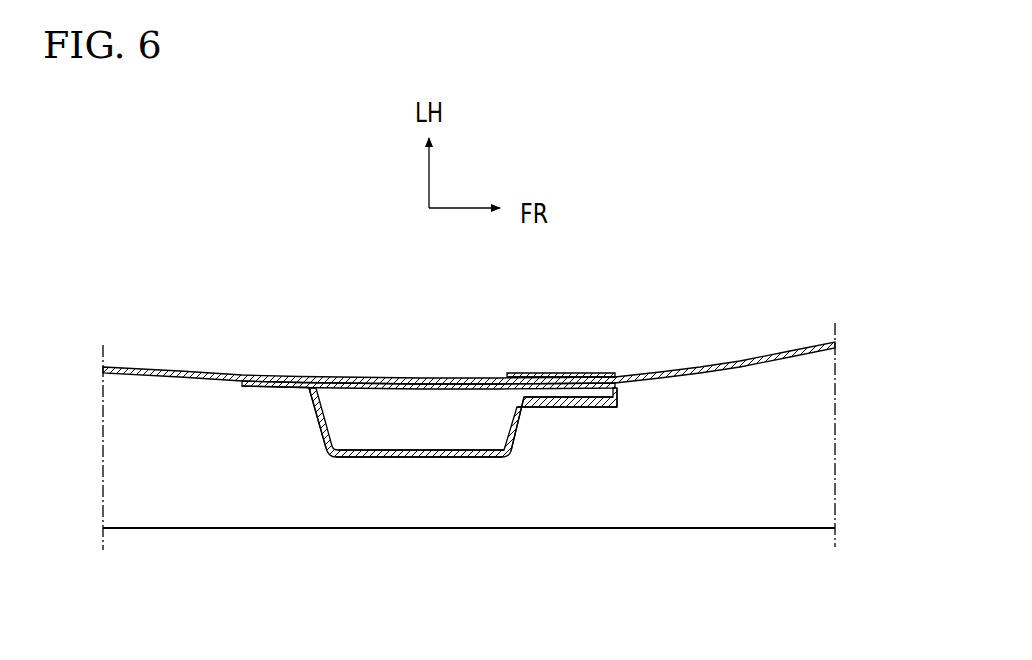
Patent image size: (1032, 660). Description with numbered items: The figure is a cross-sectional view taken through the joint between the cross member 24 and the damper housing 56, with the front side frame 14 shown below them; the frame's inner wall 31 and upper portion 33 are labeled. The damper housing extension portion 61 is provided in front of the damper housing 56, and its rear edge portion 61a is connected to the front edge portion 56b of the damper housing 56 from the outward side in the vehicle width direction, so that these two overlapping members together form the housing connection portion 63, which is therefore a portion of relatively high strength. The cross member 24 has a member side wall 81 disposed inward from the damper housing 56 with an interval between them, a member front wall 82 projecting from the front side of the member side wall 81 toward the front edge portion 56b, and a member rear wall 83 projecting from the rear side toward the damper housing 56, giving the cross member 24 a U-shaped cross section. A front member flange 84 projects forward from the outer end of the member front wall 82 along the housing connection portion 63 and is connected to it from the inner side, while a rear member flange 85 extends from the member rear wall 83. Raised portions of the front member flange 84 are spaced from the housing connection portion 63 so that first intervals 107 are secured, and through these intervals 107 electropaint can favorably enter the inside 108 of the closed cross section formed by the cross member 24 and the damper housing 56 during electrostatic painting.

The front side frame 14 is at (705, 540).
The cross member 24 is at (347, 466).
The inner wall 31 is at (622, 530).
The upper portion 33 is at (593, 505).
The damper housing 56 is at (374, 386).
The front edge portion 56b is at (600, 380).
The damper housing extension portion 61 is at (786, 366).
The rear edge portion 61a is at (553, 375).
The housing connection portion 63 is at (522, 372).
The member side wall 81 is at (452, 463).
The member front wall 82 is at (517, 432).
The member rear wall 83 is at (322, 428).
The front member flange 84 is at (593, 409).
The rear member flange 85 is at (268, 395).
The first intervals 107 is at (584, 394).
The inside of the closed cross section 108 is at (430, 431).